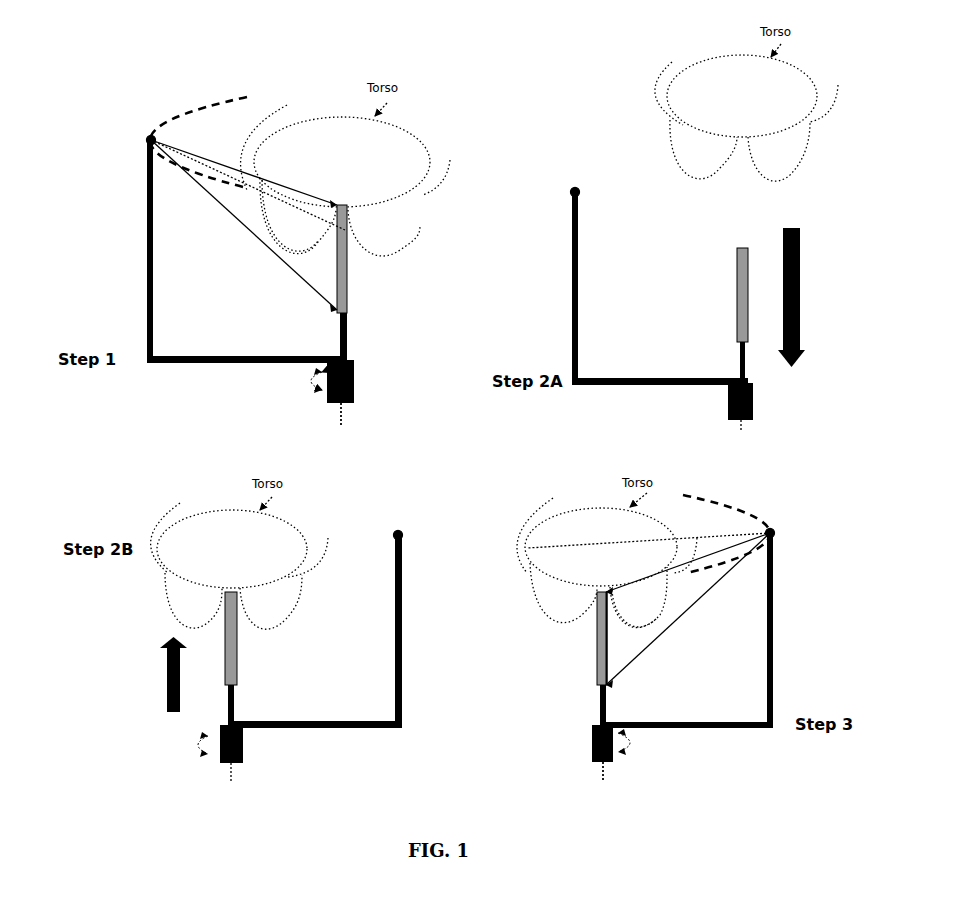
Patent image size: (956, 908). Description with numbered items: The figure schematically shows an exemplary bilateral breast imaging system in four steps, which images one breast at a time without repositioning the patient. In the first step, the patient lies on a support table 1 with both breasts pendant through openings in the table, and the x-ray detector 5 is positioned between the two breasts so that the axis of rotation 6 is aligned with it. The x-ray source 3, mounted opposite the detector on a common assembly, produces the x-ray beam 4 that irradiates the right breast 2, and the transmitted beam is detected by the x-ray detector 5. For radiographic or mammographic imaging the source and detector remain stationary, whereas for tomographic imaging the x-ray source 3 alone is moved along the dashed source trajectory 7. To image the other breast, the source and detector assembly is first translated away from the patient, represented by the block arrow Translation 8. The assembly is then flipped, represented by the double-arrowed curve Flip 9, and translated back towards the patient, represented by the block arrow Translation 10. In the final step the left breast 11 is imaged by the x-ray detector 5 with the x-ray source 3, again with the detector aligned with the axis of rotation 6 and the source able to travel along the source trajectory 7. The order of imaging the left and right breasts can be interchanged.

The support table 1 is at (288, 104).
The right breast 2 is at (297, 232).
The x-ray source 3 is at (147, 139).
The x-ray beam 4 is at (222, 167).
The x-ray detector 5 is at (333, 267).
The axis of rotation 6 is at (340, 413).
The source trajectory 7 is at (773, 483).
The translation 8 is at (819, 308).
The flip 9 is at (170, 744).
The translation 10 is at (117, 674).
The left breast 11 is at (640, 612).